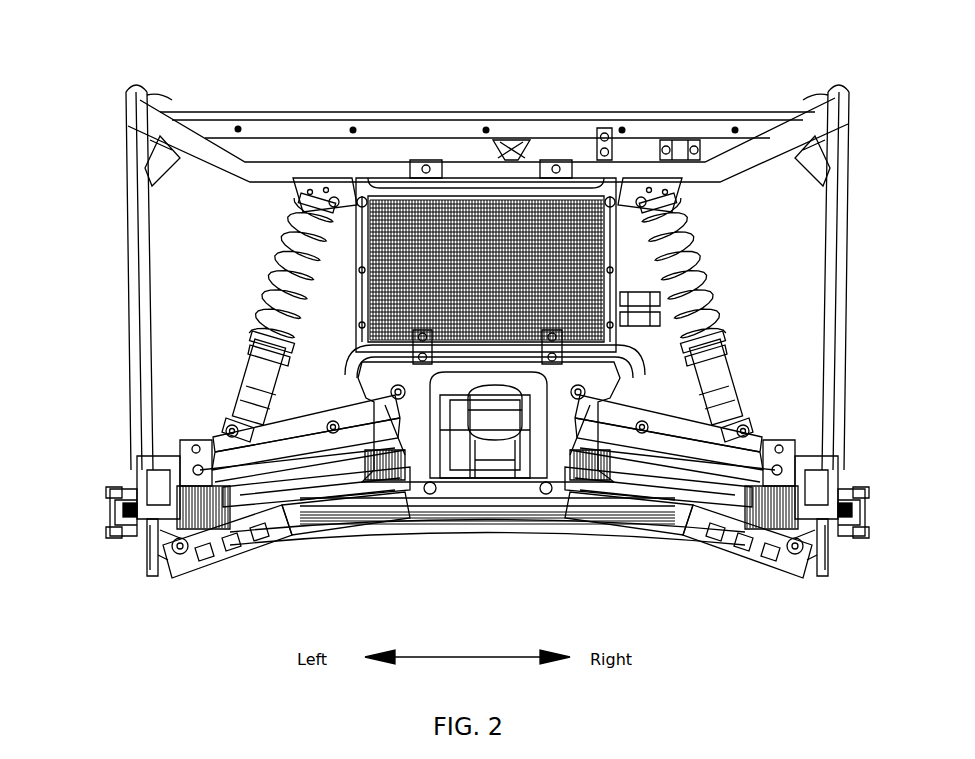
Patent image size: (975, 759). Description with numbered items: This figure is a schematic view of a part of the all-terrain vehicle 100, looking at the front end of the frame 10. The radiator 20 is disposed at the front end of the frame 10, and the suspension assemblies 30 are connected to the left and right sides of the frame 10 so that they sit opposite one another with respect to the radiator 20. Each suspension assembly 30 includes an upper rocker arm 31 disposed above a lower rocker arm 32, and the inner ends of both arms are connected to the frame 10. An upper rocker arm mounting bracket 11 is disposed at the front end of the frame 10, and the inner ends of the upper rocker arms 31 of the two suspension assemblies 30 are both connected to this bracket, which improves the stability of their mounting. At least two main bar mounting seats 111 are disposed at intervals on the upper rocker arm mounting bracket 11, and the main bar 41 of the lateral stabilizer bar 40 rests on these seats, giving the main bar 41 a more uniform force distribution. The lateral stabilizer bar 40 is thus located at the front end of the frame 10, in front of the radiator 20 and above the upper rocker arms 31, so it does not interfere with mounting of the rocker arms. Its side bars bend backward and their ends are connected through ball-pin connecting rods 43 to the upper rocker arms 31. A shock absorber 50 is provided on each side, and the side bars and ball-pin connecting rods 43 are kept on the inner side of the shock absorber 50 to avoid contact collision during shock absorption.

The all-terrain vehicle 100 is at (470, 43).
The frame 10 is at (150, 358).
The upper rocker arm mounting bracket 11 is at (386, 482).
The main bar mounting seat 111 is at (420, 352).
The radiator 20 is at (570, 200).
The suspension assembly 30 is at (285, 415).
The upper rocker arm 31 is at (487, 435).
The lower rocker arm 32 is at (300, 490).
The lateral stabilizer bar 40 is at (487, 352).
The main bar 41 is at (485, 435).
The ball-pin connecting rod 43 is at (262, 348).
The shock absorber 50 is at (292, 318).